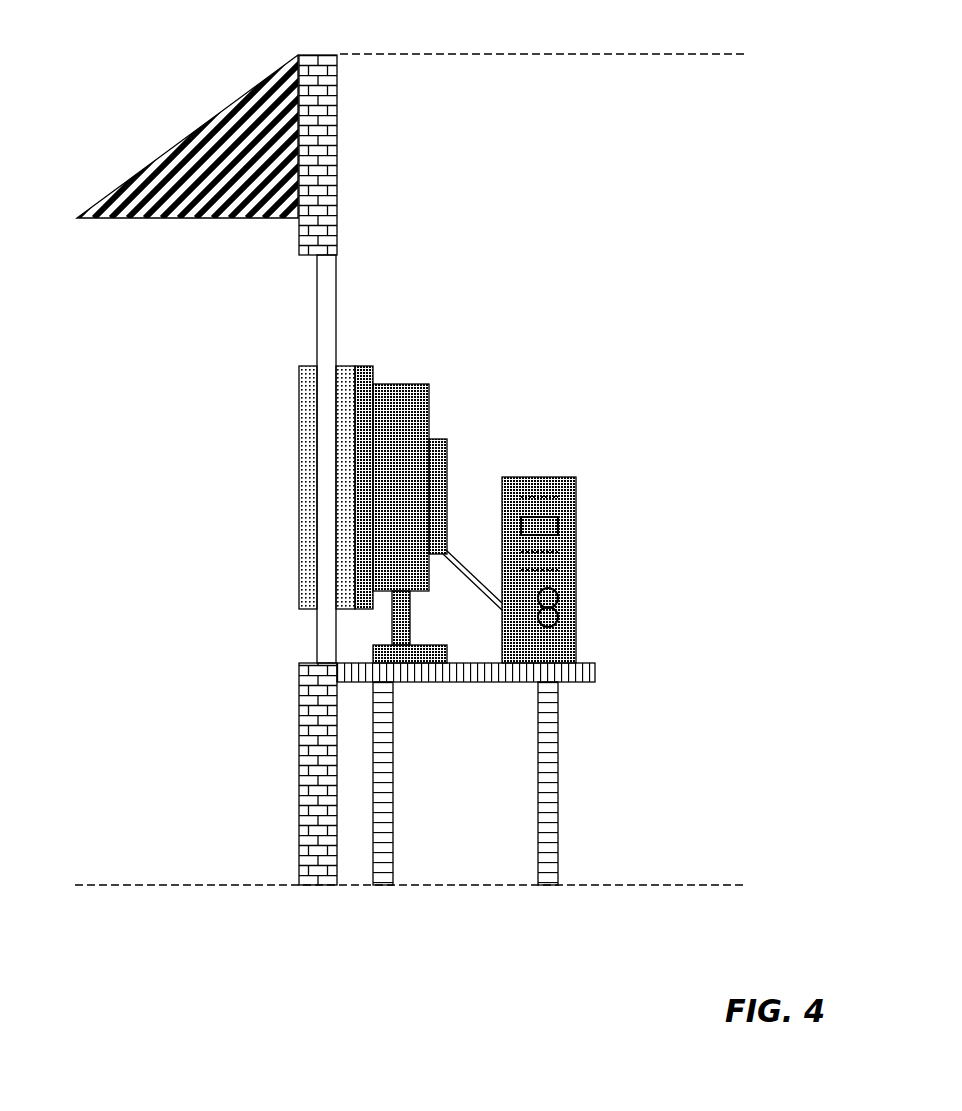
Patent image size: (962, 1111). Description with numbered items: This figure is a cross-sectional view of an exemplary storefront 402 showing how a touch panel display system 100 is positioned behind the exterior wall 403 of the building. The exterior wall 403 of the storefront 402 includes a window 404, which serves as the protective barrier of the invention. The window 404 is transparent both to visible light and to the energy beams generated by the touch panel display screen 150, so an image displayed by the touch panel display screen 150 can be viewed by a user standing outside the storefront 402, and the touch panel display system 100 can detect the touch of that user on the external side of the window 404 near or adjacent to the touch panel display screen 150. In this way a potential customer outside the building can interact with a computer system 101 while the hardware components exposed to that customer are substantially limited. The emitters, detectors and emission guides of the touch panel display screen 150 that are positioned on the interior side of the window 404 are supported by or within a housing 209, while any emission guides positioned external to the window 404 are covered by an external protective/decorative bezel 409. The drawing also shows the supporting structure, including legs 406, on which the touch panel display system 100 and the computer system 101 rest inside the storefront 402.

The touch panel display system 100 is at (640, 284).
The computer system 101 is at (576, 515).
The touch panel display screen 150 is at (429, 403).
The housing 209 is at (337, 365).
The storefront 402 is at (72, 87).
The exterior wall 403 is at (299, 792).
The window 404 is at (316, 310).
The table legs 406 is at (558, 810).
The external protective/decorative bezel 409 is at (299, 420).